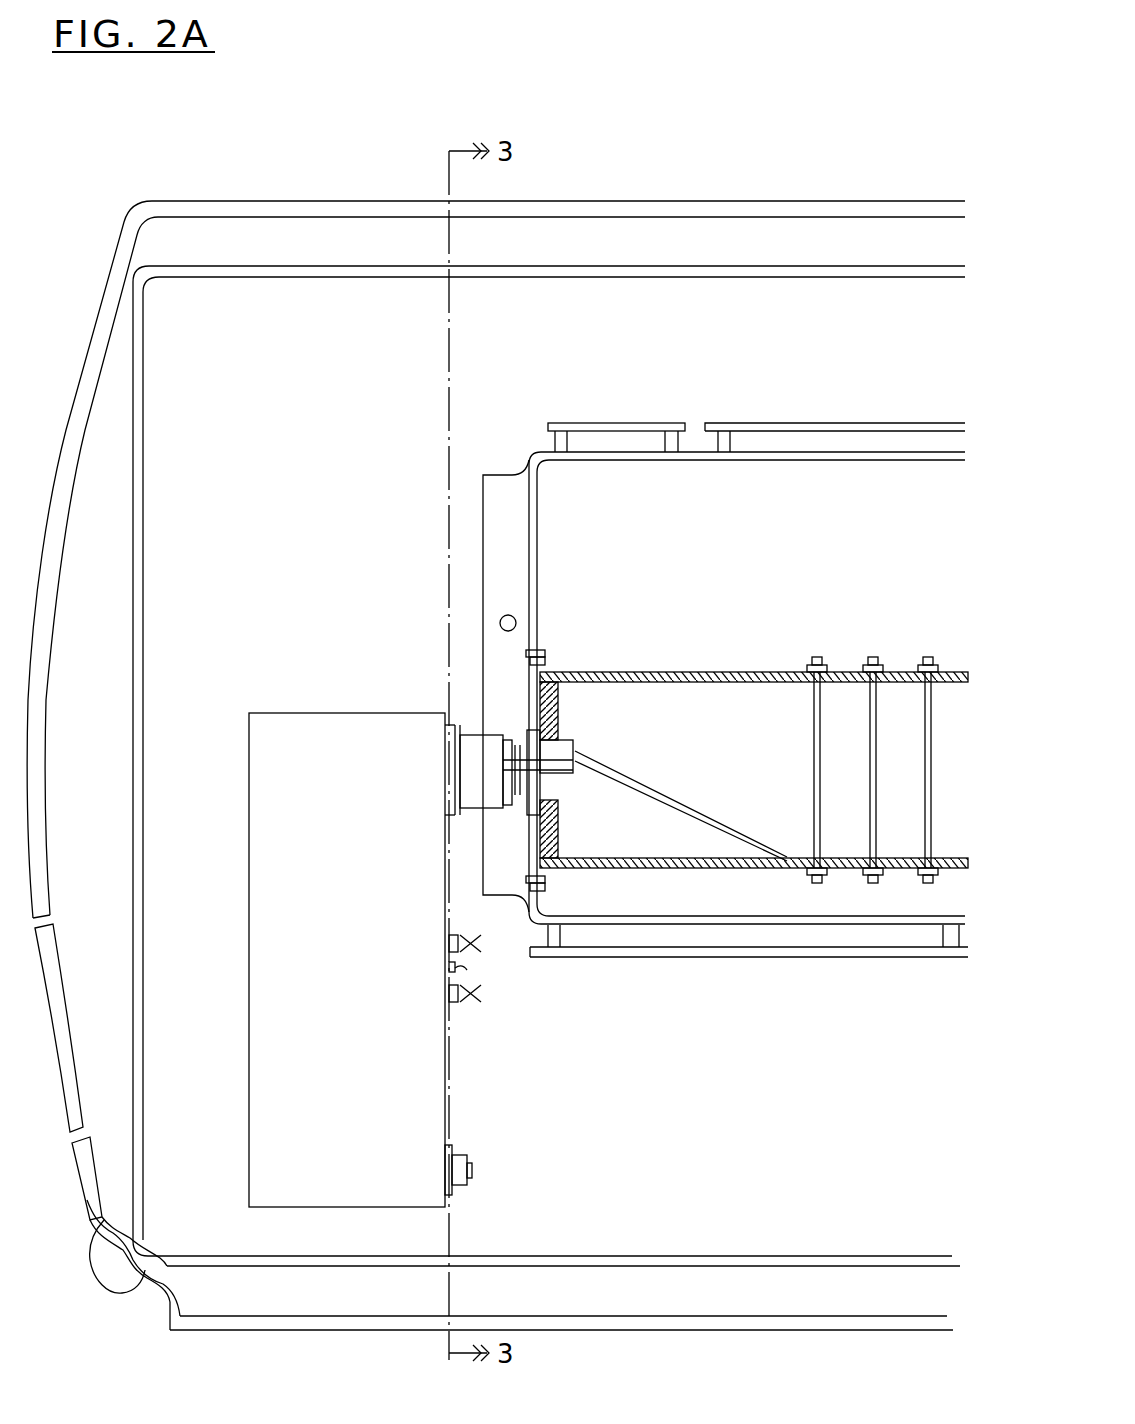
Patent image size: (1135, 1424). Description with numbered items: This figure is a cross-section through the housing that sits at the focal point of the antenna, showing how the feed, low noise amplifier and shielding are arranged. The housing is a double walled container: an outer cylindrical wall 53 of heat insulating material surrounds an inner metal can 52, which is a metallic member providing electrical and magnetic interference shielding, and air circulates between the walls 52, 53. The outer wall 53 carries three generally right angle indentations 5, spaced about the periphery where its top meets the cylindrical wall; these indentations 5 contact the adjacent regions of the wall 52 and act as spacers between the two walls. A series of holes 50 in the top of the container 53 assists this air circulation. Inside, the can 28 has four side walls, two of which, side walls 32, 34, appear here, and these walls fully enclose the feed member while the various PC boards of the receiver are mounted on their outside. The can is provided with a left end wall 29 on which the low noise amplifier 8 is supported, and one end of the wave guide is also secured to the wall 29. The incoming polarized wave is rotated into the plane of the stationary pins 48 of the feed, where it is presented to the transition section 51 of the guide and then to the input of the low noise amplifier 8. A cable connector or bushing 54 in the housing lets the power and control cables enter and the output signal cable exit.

The right angle indentations 5 is at (98, 1244).
The low noise amplifier 8 is at (345, 918).
The can 28 is at (387, 686).
The left end wall 29 is at (537, 535).
The side wall 32 is at (657, 918).
The side wall 34 is at (705, 455).
The pins 48 is at (871, 718).
The holes 50 is at (53, 921).
The transition section 51 is at (702, 758).
The metal can 52 is at (720, 1260).
The outer cylindrical wall 53 is at (828, 1326).
The cable connector or bushing 54 is at (568, 751).